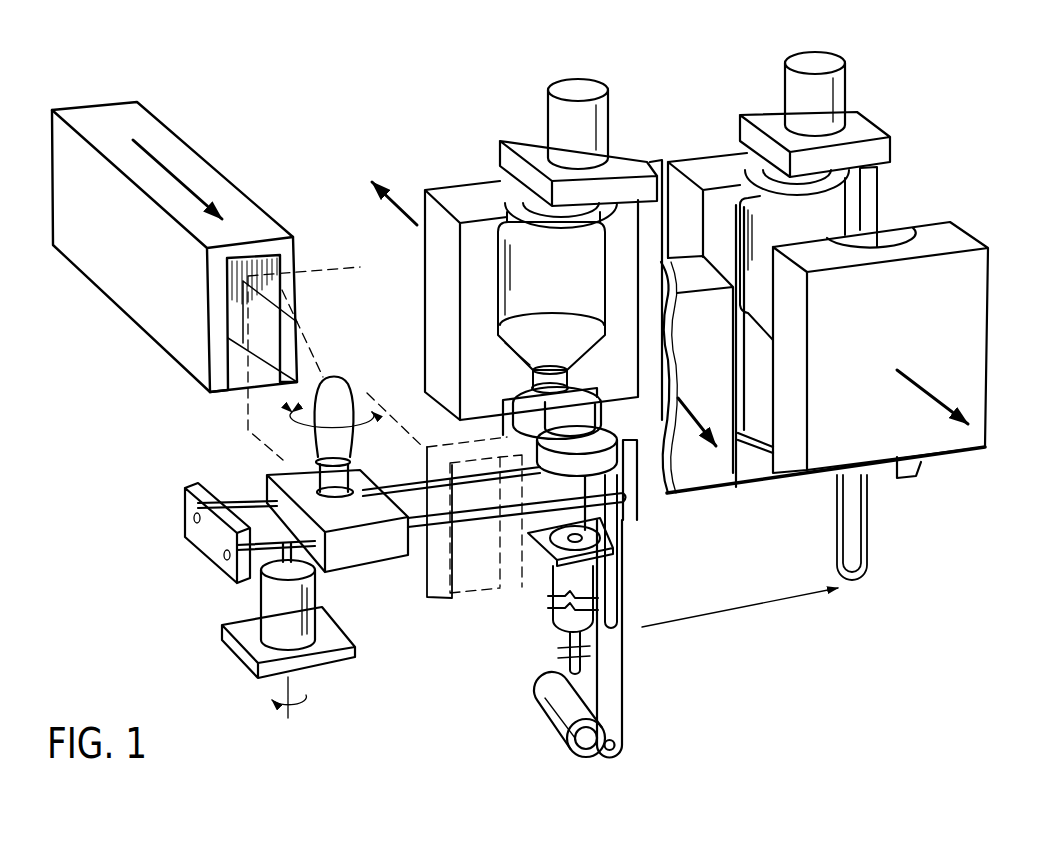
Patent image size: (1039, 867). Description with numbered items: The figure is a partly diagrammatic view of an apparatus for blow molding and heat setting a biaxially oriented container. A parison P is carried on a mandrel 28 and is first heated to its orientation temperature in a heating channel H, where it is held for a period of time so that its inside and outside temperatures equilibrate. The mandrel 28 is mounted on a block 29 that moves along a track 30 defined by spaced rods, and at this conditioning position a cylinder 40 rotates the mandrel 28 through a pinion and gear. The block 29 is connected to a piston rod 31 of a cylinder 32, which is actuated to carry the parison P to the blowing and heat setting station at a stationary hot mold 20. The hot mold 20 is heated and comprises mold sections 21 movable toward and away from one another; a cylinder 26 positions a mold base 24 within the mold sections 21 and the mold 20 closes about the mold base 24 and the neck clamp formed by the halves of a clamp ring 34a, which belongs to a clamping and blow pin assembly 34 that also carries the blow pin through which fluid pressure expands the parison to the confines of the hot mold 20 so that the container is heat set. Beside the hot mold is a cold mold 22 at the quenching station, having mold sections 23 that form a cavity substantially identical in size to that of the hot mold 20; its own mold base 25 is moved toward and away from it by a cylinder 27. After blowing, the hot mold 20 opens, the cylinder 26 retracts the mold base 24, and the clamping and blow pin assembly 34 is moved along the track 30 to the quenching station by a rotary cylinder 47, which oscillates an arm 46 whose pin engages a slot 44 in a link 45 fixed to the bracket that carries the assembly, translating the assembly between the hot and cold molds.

The heating channel H is at (136, 266).
The parison P is at (249, 418).
The hot mold 20 is at (430, 181).
The mold sections 21 is at (448, 204).
The cold mold 22 is at (848, 349).
The mold sections 23 is at (702, 172).
The mold base 24 is at (587, 213).
The mold base 25 is at (830, 202).
The cylinder 26 is at (571, 92).
The cylinder 27 is at (821, 62).
The mandrel 28 is at (305, 480).
The block 29 is at (358, 556).
The track 30 is at (425, 530).
The piston rod 31 is at (472, 473).
The cylinder 32 is at (762, 455).
The clamping and blow pin assembly 34 is at (545, 615).
The clamp ring 34a is at (503, 418).
The cylinder 40 is at (262, 598).
The slot 44 is at (617, 592).
The link 45 is at (627, 549).
The arm 46 is at (612, 695).
The rotary cylinder 47 is at (585, 742).